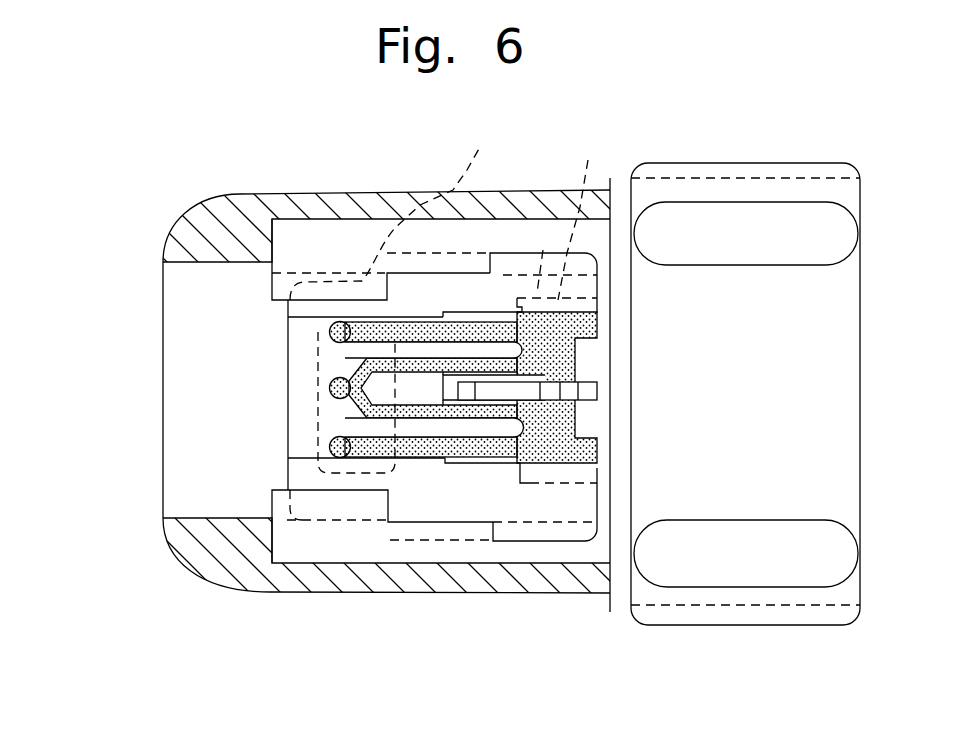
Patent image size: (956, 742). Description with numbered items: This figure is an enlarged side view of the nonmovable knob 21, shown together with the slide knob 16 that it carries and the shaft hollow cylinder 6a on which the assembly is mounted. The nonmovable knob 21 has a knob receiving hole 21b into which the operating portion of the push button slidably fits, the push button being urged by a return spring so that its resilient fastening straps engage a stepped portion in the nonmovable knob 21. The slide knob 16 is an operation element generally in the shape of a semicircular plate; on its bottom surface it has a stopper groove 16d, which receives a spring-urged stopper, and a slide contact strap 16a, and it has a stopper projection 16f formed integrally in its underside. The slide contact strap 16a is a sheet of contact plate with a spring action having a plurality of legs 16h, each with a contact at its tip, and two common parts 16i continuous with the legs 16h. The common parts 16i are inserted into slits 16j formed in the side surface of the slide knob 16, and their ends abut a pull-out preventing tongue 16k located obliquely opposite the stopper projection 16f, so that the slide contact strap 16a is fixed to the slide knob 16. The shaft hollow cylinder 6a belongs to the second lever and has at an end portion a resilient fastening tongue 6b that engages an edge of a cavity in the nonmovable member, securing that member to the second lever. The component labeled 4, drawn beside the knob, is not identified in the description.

The cap 4 is at (744, 163).
The nonmovable knob 21 is at (357, 185).
The knob receiving hole 21b is at (190, 518).
The slide knob 16 is at (508, 253).
The slide contact strap 16a is at (540, 312).
The stopper groove 16d is at (532, 376).
The stopper projection 16f is at (492, 318).
The legs 16h is at (422, 345).
The common parts 16i is at (556, 335).
The slits 16j is at (581, 323).
The pull-out preventing tongue 16k is at (590, 385).
The shaft hollow cylinder 6a is at (331, 446).
The resilient fastening tongue 6b is at (317, 356).